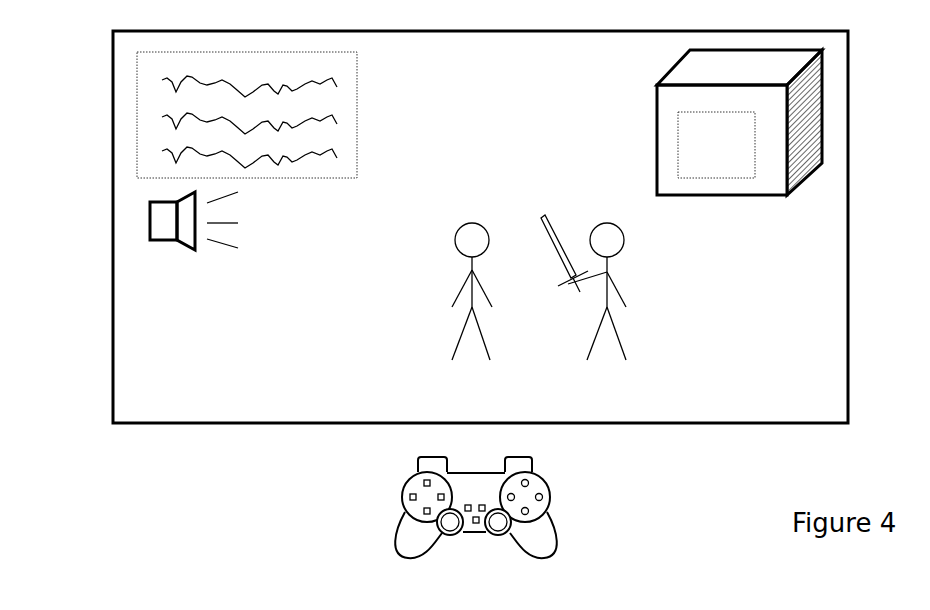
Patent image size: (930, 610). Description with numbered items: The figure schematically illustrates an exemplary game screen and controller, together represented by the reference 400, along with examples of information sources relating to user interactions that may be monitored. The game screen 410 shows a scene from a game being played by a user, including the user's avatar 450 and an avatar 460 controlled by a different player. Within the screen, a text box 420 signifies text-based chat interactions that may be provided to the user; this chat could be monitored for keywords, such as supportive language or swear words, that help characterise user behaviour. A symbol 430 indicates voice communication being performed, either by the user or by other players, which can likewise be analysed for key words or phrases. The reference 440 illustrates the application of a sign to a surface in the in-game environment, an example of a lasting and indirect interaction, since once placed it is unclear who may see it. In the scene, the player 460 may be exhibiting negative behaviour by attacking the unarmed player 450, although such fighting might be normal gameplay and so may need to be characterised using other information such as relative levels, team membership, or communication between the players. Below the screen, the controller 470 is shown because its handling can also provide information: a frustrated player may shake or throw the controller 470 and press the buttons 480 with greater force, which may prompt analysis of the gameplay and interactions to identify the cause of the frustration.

The game screen and controller 400 is at (24, 536).
The game screen 410 is at (112, 362).
The text box 420 is at (367, 86).
The symbol 430 is at (137, 221).
The sign 440 is at (755, 145).
The user's avatar 450 is at (453, 316).
The avatar controlled by a different player 460 is at (622, 318).
The controller 470 is at (373, 522).
The buttons 480 is at (523, 478).